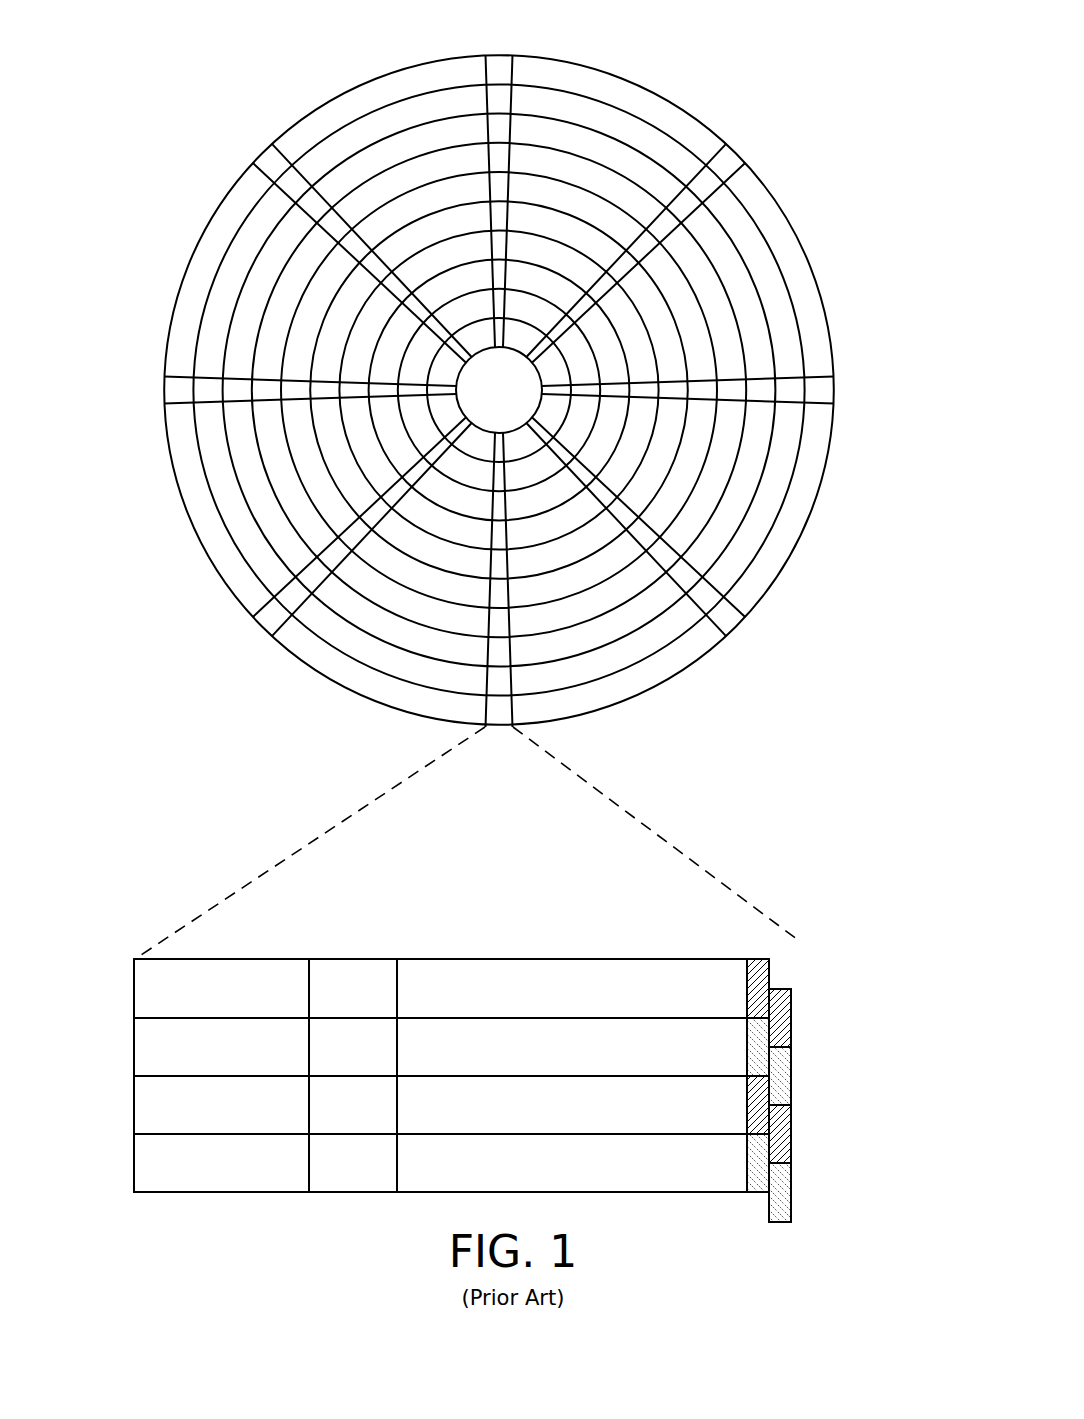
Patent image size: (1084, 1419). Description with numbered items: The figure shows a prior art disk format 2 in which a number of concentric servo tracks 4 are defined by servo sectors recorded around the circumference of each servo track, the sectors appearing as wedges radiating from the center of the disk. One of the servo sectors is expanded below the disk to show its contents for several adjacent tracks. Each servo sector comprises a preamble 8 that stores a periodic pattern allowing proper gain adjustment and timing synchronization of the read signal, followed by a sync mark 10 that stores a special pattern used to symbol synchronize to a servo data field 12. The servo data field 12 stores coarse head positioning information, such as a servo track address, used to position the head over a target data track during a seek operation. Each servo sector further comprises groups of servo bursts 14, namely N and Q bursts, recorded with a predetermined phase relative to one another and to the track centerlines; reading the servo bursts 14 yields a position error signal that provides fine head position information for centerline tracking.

The disk format 2 is at (501, 403).
The servo tracks 4 is at (613, 123).
The preamble 8 is at (232, 958).
The sync mark 10 is at (355, 958).
The servo data field 12 is at (560, 958).
The servo bursts 14 is at (785, 958).